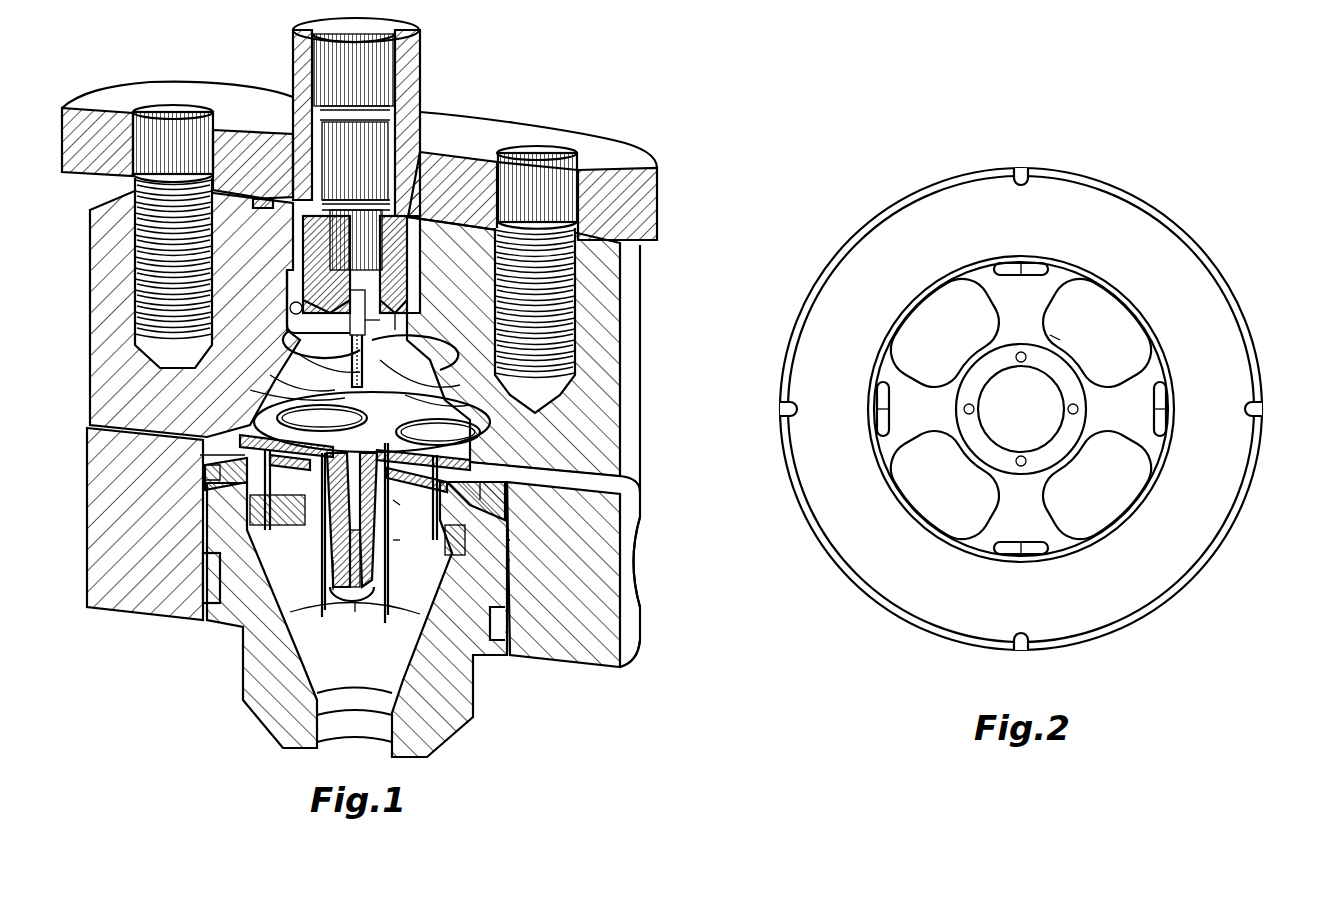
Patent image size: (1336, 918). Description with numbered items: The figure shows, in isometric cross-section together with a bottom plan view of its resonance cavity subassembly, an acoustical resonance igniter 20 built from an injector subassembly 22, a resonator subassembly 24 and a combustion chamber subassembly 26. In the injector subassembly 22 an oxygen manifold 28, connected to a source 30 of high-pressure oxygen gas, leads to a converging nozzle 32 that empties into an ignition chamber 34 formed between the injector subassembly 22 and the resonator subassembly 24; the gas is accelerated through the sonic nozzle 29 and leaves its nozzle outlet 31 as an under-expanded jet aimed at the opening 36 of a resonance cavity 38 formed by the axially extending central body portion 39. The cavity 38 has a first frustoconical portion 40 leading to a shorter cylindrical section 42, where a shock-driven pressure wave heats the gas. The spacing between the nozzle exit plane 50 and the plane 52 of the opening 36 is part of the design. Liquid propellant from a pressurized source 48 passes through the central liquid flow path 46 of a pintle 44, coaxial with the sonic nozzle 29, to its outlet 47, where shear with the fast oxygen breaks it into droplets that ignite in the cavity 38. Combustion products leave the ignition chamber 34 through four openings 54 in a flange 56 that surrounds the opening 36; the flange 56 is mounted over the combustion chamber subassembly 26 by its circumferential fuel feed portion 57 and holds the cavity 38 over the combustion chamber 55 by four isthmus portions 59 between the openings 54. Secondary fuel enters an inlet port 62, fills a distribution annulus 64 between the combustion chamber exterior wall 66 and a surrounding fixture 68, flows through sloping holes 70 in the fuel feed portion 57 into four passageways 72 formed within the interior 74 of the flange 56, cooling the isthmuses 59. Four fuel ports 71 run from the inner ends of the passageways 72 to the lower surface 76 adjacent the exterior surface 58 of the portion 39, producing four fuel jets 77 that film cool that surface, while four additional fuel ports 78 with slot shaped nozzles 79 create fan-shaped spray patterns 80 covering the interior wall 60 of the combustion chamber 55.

In FIG. 1, the acoustical resonance igniter 20 is at (670, 180).
In FIG. 1, the injector subassembly 22 is at (637, 368).
In FIG. 1, the resonator subassembly 24 is at (252, 420).
In FIG. 2, the resonator subassembly 24 is at (1165, 198).
In FIG. 1, the combustion chamber subassembly 26 is at (640, 500).
In FIG. 1, the oxygen manifold 28 is at (430, 300).
In FIG. 1, the sonic nozzle 29 is at (298, 345).
In FIG. 1, the source of high-pressure oxygen gas 30 is at (290, 305).
In FIG. 1, the nozzle outlet 31 is at (312, 367).
In FIG. 1, the converging nozzle 32 is at (440, 355).
In FIG. 1, the ignition chamber 34 is at (265, 376).
In FIG. 1, the resonance cavity opening 36 is at (332, 432).
In FIG. 1, the resonance cavity 38 is at (388, 566).
In FIG. 1, the axially extending central body portion 39 is at (348, 612).
In FIG. 1, the frustoconical portion 40 is at (360, 480).
In FIG. 1, the cylindrical section 42 is at (375, 588).
In FIG. 1, the pintle 44 is at (415, 330).
In FIG. 1, the central liquid flow path 46 is at (423, 310).
In FIG. 1, the pintle outlet 47 is at (425, 390).
In FIG. 1, the source of liquid propellant 48 is at (384, 40).
In FIG. 1, the nozzle exit plane 50 is at (250, 388).
In FIG. 1, the plane of the resonance cavity opening 52 is at (462, 428).
In FIG. 1, the flange openings 54 is at (282, 408).
In FIG. 2, the flange openings 54 is at (965, 353).
In FIG. 1, the combustion chamber 55 is at (440, 592).
In FIG. 1, the flange 56 is at (200, 456).
In FIG. 2, the flange 56 is at (1065, 266).
In FIG. 1, the circumferential fuel feed portion 57 is at (200, 518).
In FIG. 2, the circumferential fuel feed portion 57 is at (1137, 565).
In FIG. 1, the exterior surface 58 is at (333, 600).
In FIG. 1, the isthmus portions 59 is at (432, 405).
In FIG. 2, the isthmus portions 59 is at (1021, 405).
In FIG. 1, the interior wall 60 is at (255, 530).
In FIG. 1, the inlet port 62 is at (640, 570).
In FIG. 1, the distribution annulus 64 is at (520, 540).
In FIG. 1, the combustion chamber exterior wall 66 is at (520, 560).
In FIG. 1, the surrounding fixture 68 is at (640, 640).
In FIG. 1, the sloping holes 70 is at (185, 488).
In FIG. 2, the sloping holes 70 is at (1020, 166).
In FIG. 1, the fuel ports 71 is at (303, 505).
In FIG. 2, the fuel ports 71 is at (1021, 362).
In FIG. 1, the passageways 72 is at (396, 545).
In FIG. 1, the interior of the resonance cavity flange 74 is at (250, 432).
In FIG. 1, the lower surface of the support flange 76 is at (395, 505).
In FIG. 2, the lower surface of the support flange 76 is at (1052, 338).
In FIG. 1, the fuel jets 77 is at (255, 636).
In FIG. 1, the additional fuel ports 78 is at (215, 476).
In FIG. 2, the slot shaped nozzles 79 is at (1021, 264).
In FIG. 1, the fan-shaped spray patterns 80 is at (290, 525).